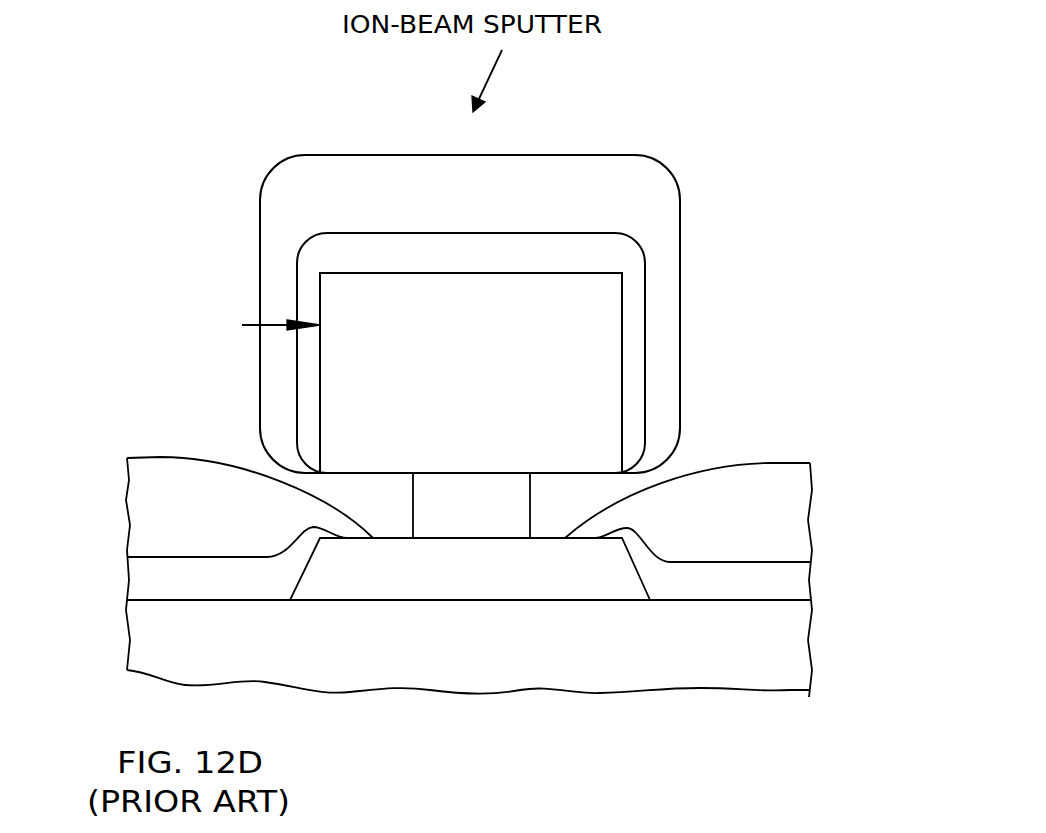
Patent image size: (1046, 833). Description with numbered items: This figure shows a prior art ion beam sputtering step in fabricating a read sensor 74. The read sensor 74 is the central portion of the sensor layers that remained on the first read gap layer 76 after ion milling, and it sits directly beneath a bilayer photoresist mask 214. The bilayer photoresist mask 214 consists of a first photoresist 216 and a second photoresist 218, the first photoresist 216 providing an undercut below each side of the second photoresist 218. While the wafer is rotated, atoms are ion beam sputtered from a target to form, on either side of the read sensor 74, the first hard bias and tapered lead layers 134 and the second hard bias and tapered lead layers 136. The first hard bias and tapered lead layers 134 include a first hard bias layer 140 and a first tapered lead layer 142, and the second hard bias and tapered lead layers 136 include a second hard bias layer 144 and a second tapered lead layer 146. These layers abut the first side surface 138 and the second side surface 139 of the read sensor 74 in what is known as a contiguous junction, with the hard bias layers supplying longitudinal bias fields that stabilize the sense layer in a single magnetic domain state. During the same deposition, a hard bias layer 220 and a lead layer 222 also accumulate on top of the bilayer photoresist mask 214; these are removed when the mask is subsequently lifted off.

The lead layer 222 is at (652, 190).
The hard bias layer 220 is at (622, 265).
The second photoresist 218 is at (595, 353).
The bilayer photoresist mask 214 is at (256, 325).
The first photoresist 216 is at (500, 510).
The first tapered lead layer 142 is at (153, 482).
The first hard bias layer 140 is at (152, 580).
The first hard bias and tapered lead layers 134 is at (85, 458).
The second tapered lead layer 146 is at (793, 508).
The second hard bias layer 144 is at (783, 585).
The second hard bias and tapered lead layers 136 is at (858, 465).
The first side surface 138 is at (300, 572).
The second side surface 139 is at (640, 570).
The first read gap layer 76 is at (198, 645).
The read sensor 74 is at (558, 583).